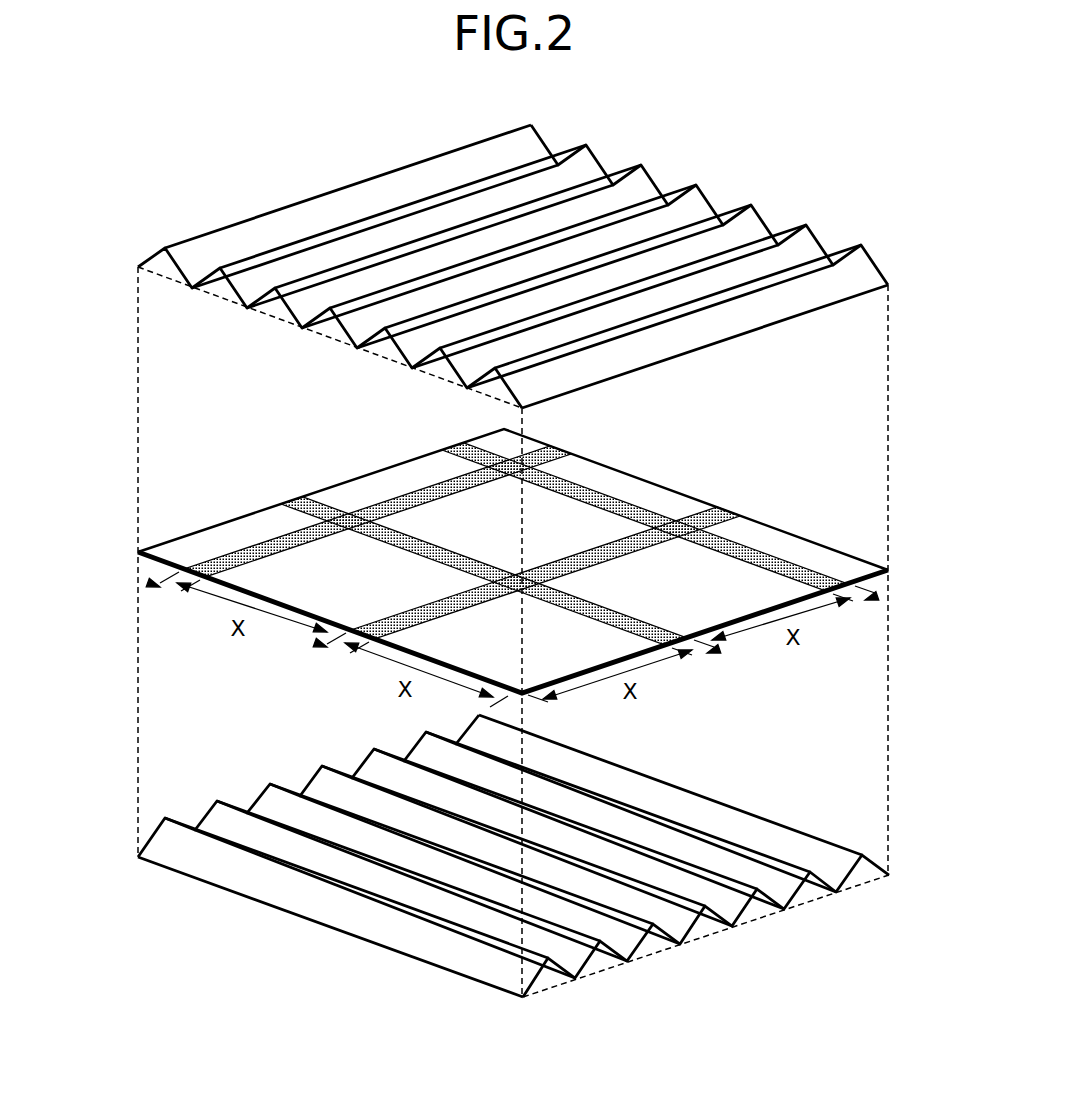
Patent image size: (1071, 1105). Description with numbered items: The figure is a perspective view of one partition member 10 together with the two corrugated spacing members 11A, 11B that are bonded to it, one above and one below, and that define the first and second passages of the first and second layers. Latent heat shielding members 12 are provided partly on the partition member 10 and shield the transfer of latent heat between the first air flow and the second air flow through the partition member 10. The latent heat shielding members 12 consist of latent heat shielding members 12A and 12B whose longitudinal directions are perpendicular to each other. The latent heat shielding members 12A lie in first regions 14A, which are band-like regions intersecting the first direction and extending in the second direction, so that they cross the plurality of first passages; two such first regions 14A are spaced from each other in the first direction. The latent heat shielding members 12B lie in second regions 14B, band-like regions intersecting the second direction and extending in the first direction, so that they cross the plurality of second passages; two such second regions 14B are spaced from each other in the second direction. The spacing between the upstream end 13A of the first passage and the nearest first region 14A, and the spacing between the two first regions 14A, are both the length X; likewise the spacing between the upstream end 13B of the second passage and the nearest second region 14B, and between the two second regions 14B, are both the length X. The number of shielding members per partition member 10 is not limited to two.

The partition member 10 is at (400, 468).
The spacing member 11A is at (376, 192).
The spacing member 11B is at (670, 800).
The latent heat shielding members 12 is at (512, 509).
The latent heat shielding member 12A is at (556, 536).
The latent heat shielding member 12B is at (263, 543).
The upstream end of the first passage 13A is at (160, 281).
The upstream end of the second passage 13B is at (546, 990).
The first region 14A is at (879, 604).
The second region 14B is at (147, 592).